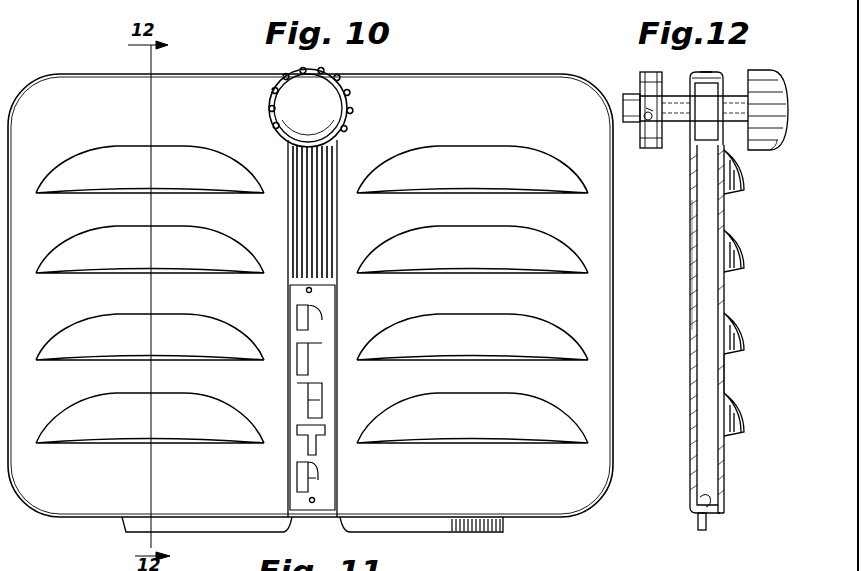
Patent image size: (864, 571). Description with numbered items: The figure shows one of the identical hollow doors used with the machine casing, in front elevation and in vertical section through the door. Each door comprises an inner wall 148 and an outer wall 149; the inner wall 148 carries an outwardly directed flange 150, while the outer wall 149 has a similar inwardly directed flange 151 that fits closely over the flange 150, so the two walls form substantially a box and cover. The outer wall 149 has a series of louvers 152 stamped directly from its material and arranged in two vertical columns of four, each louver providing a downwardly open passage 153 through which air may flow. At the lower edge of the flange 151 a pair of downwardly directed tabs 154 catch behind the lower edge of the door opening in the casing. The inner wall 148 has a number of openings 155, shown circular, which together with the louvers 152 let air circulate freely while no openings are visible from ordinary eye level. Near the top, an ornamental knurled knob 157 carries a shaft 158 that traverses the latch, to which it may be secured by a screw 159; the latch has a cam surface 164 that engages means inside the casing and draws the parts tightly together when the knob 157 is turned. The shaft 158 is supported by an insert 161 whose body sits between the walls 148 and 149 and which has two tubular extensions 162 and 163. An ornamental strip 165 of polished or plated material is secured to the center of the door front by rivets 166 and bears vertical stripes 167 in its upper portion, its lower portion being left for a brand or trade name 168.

In FIG. 12, the inner wall 148 is at (691, 362).
In FIG. 12, the outer wall 149 is at (722, 222).
In FIG. 12, the flange 150 is at (704, 500).
In FIG. 12, the flange 151 is at (707, 72).
In FIG. 12, the louvers 152 is at (736, 172).
In FIG. 12, the passage 153 is at (735, 275).
In FIG. 10, the tabs 154 is at (135, 524).
In FIG. 12, the tabs 154 is at (710, 526).
In FIG. 10, the openings 155 is at (310, 295).
In FIG. 12, the openings 155 is at (690, 254).
In FIG. 10, the knurled knob 157 is at (328, 98).
In FIG. 12, the knurled knob 157 is at (757, 151).
In FIG. 12, the shaft 158 is at (628, 98).
In FIG. 12, the screw 159 is at (648, 125).
In FIG. 12, the insert 161 is at (705, 148).
In FIG. 12, the tubular extension 162 is at (682, 122).
In FIG. 12, the tubular extension 163 is at (738, 94).
In FIG. 12, the cam surface 164 is at (668, 72).
In FIG. 10, the ornamental strip 165 is at (335, 332).
In FIG. 12, the ornamental strip 165 is at (726, 372).
In FIG. 10, the rivets 166 is at (304, 292).
In FIG. 10, the vertical stripes 167 is at (322, 178).
In FIG. 10, the indicator slots 168 is at (308, 400).